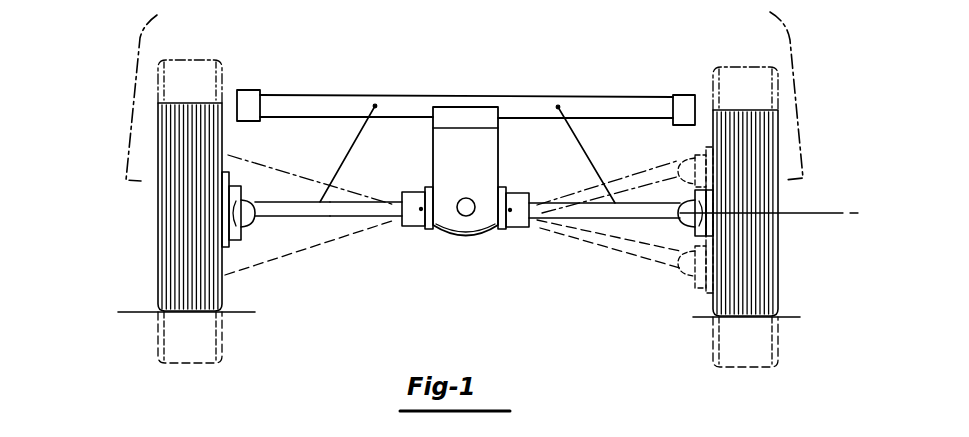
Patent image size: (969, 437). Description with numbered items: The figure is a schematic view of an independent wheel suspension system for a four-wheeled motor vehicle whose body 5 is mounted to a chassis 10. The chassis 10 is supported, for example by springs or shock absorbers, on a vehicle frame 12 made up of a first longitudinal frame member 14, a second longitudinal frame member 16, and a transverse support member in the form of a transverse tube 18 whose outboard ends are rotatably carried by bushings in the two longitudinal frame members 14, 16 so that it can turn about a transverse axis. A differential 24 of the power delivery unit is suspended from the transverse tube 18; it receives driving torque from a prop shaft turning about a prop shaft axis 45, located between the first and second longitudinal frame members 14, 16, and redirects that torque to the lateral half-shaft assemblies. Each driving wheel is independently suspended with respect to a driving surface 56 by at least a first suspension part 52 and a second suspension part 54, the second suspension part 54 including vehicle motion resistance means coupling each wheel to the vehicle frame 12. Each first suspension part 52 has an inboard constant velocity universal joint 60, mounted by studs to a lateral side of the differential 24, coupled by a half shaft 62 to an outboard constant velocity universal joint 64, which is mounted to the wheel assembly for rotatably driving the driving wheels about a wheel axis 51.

The body 5 is at (136, 73).
The chassis 10 is at (470, 74).
The vehicle frame 12 is at (467, 109).
The first longitudinal frame member 14 is at (244, 99).
The second longitudinal frame member 16 is at (686, 97).
The transverse tube 18 is at (584, 105).
The differential 24 is at (475, 208).
The prop shaft axis 45 is at (466, 213).
The wheel axis 51 is at (822, 213).
The first suspension part 52 is at (355, 219).
The second suspension part 54 is at (355, 137).
The driving surface 56 is at (126, 312).
The inboard constant velocity universal joint 60 is at (410, 228).
The half shaft 62 is at (307, 219).
The outboard constant velocity universal joint 64 is at (250, 225).